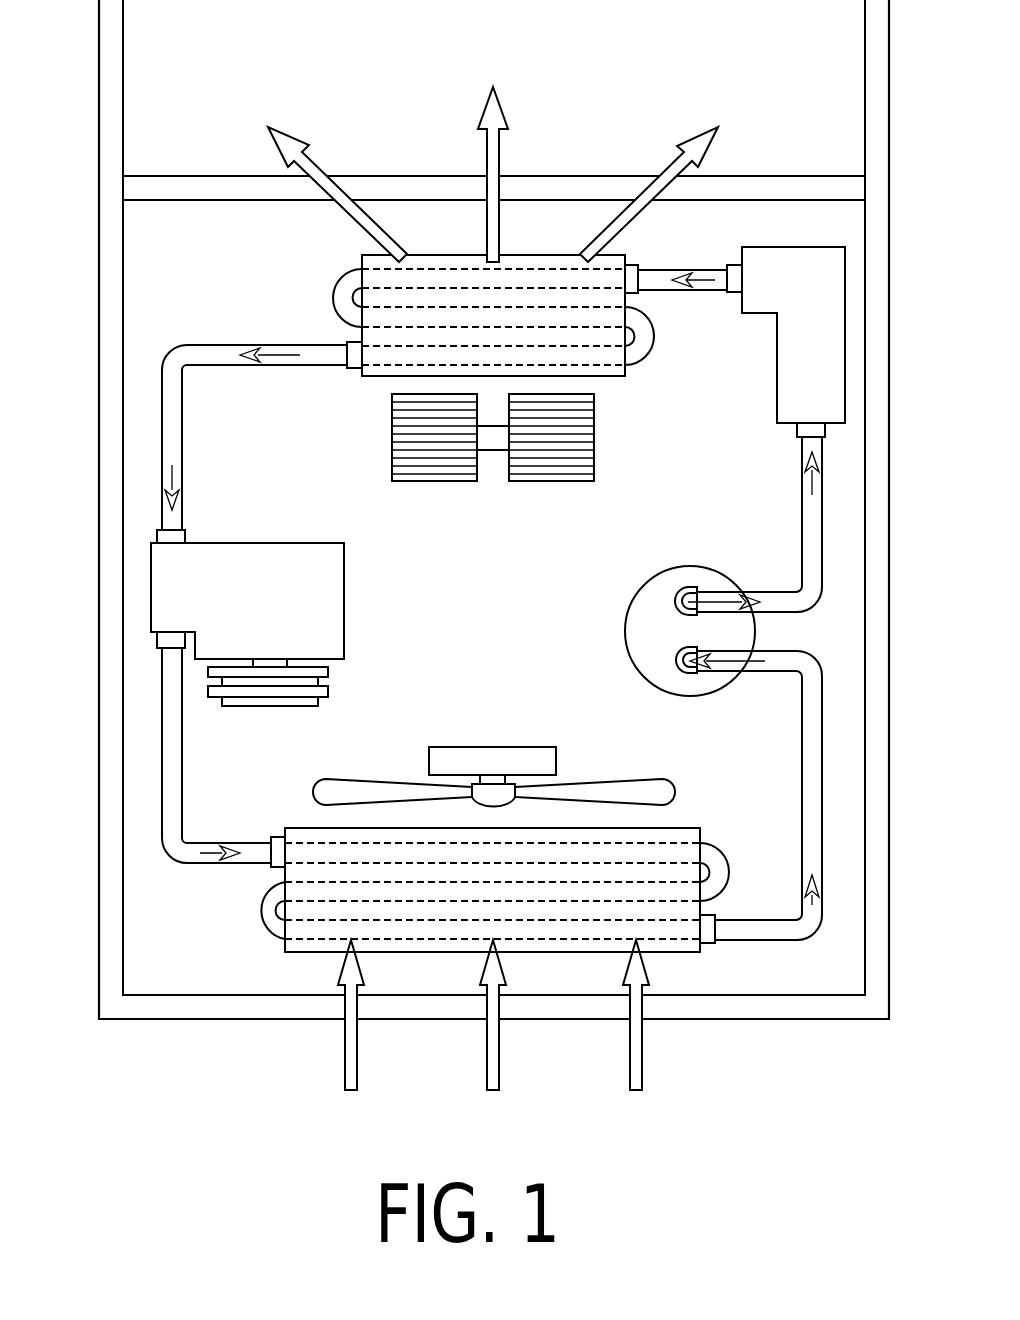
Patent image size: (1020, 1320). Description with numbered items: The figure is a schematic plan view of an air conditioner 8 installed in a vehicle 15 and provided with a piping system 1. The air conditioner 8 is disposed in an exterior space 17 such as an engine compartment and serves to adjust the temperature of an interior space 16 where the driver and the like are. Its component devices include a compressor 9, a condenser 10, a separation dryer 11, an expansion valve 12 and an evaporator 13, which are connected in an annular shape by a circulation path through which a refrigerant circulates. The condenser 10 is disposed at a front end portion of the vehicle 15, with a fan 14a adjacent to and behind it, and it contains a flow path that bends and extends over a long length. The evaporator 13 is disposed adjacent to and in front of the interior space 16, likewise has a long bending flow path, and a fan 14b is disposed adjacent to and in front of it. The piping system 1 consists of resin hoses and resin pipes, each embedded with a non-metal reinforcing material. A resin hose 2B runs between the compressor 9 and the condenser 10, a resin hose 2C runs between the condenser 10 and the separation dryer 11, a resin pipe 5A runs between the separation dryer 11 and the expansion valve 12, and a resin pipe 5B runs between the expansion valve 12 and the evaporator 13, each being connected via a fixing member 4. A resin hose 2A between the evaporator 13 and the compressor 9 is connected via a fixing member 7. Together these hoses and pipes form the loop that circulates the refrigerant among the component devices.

The piping system 1 is at (224, 338).
The resin hose 2A is at (228, 350).
The resin hose 2B is at (183, 765).
The resin hose 2C is at (800, 783).
The fixing member 4 is at (635, 268).
The resin pipe 5A is at (800, 550).
The resin pipe 5B is at (690, 282).
The fixing member 7 is at (352, 360).
The air conditioner 8 is at (245, 258).
The compressor 9 is at (338, 610).
The condenser 10 is at (425, 945).
The separation dryer 11 is at (635, 632).
The expansion valve 12 is at (795, 250).
The evaporator 13 is at (452, 265).
The fan 14a is at (490, 750).
The fan 14b is at (470, 472).
The vehicle 15 is at (242, 1008).
The interior space 16 is at (125, 100).
The exterior space 17 is at (125, 328).